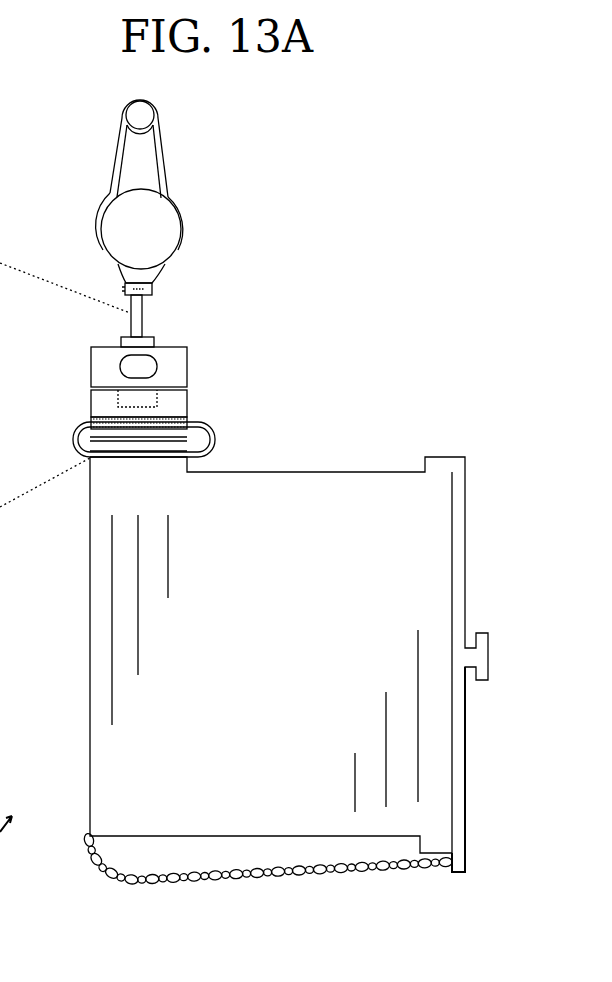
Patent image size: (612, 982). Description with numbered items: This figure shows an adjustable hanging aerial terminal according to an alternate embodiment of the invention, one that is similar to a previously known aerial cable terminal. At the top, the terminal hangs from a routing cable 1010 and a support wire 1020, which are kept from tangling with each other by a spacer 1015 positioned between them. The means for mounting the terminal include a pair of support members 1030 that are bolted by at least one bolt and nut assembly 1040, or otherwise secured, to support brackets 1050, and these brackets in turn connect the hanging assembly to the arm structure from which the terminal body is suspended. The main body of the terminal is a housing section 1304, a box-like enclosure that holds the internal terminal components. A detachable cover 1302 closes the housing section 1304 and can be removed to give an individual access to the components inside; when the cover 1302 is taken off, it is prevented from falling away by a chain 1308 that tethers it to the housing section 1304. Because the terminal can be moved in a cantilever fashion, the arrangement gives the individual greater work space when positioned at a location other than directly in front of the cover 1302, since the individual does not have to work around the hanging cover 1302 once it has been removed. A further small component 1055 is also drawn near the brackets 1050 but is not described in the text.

The routing cable 1010 is at (132, 235).
The spacer 1015 is at (132, 168).
The support wire 1020 is at (142, 115).
The support members 1030 is at (168, 198).
The bolt and nut assembly 1040 is at (157, 275).
The support brackets 1050 is at (147, 313).
The base plate 1055 is at (155, 338).
The detachable cover 1302 is at (467, 852).
The housing section 1304 is at (383, 472).
The chain 1308 is at (205, 885).